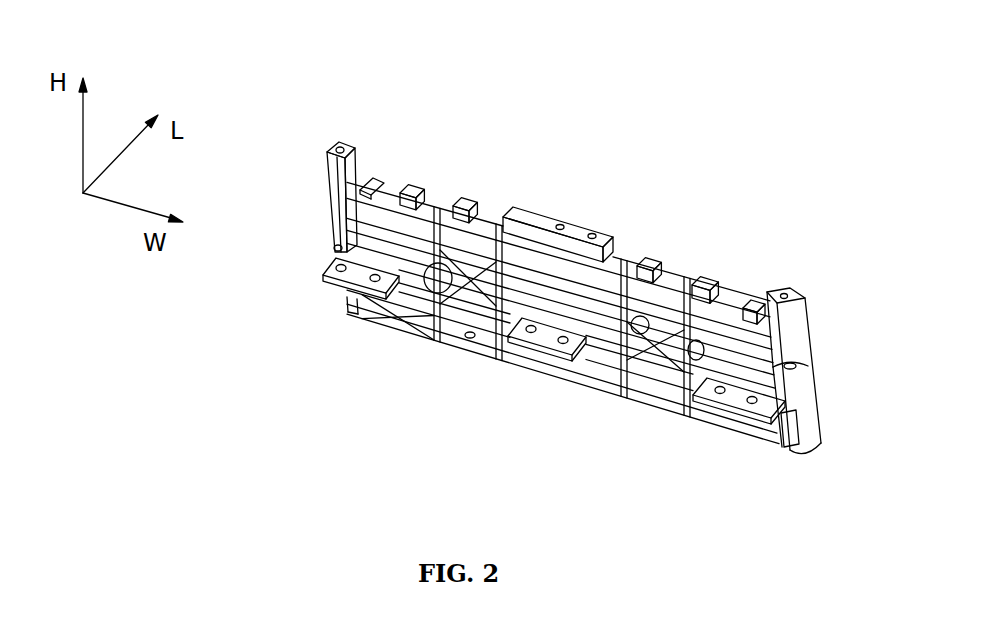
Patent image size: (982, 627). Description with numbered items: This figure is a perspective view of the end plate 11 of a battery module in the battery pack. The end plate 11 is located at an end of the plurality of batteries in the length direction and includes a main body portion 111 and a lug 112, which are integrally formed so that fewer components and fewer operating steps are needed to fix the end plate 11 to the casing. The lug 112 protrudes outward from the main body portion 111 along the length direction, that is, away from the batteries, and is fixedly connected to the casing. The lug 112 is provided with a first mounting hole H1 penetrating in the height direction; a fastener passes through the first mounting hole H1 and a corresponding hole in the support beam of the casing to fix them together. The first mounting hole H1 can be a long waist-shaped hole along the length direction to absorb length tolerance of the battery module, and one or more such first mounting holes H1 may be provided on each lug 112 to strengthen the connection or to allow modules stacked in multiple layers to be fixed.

The end plate 11 is at (361, 51).
The main body portion 111 is at (493, 204).
The lug 112 is at (323, 291).
The first mounting hole H1 is at (332, 247).